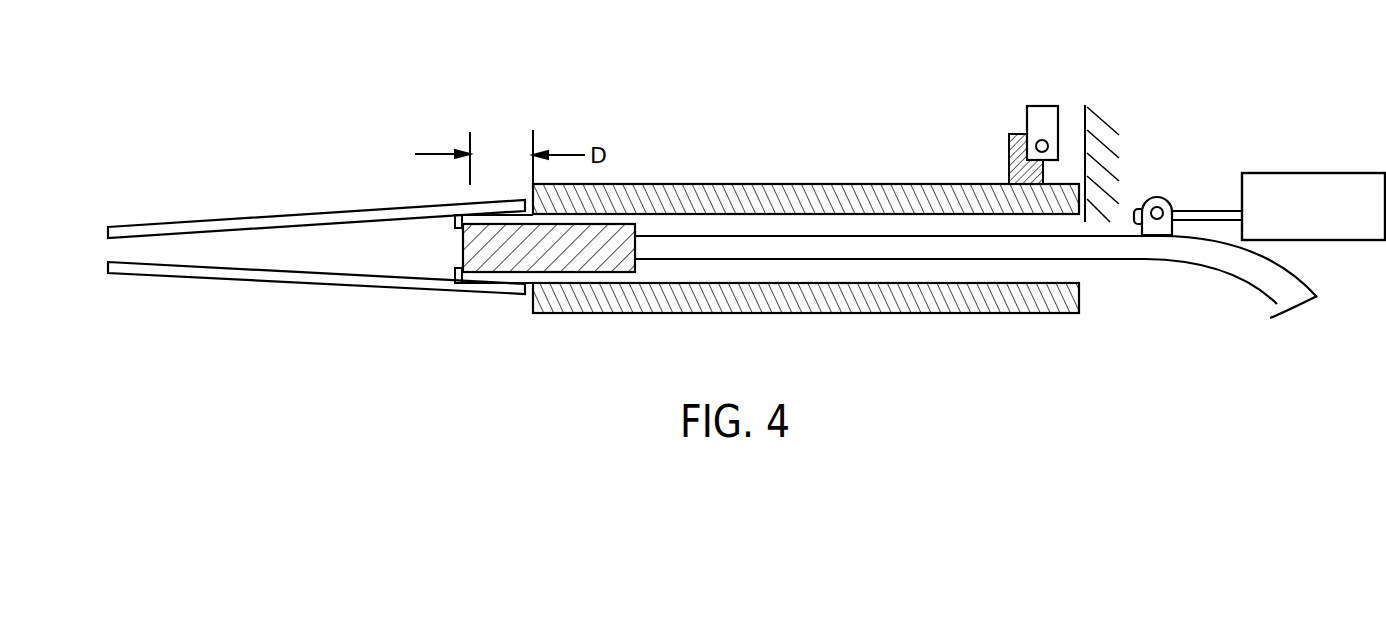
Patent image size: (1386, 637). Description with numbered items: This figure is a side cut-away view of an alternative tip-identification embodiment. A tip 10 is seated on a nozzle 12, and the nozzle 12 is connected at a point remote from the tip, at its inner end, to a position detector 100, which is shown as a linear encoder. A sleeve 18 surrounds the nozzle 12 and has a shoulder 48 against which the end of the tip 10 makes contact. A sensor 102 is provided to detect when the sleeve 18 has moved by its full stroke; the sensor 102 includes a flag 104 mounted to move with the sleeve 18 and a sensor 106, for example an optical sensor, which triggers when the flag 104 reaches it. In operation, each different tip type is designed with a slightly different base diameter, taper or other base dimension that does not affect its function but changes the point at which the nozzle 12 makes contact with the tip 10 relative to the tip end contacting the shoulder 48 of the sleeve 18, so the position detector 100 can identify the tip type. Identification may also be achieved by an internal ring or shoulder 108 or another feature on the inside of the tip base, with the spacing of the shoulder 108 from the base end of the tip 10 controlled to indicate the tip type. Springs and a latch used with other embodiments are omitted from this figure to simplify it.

The tip 10 is at (273, 212).
The nozzle 12 is at (608, 224).
The sleeve 18 is at (741, 184).
The shoulder 48 is at (532, 307).
The position detector 100 is at (1316, 173).
The sensor 102 is at (1033, 102).
The flag 104 is at (1009, 143).
The sensor 106 is at (1058, 106).
The internal ring or shoulder 108 is at (455, 270).